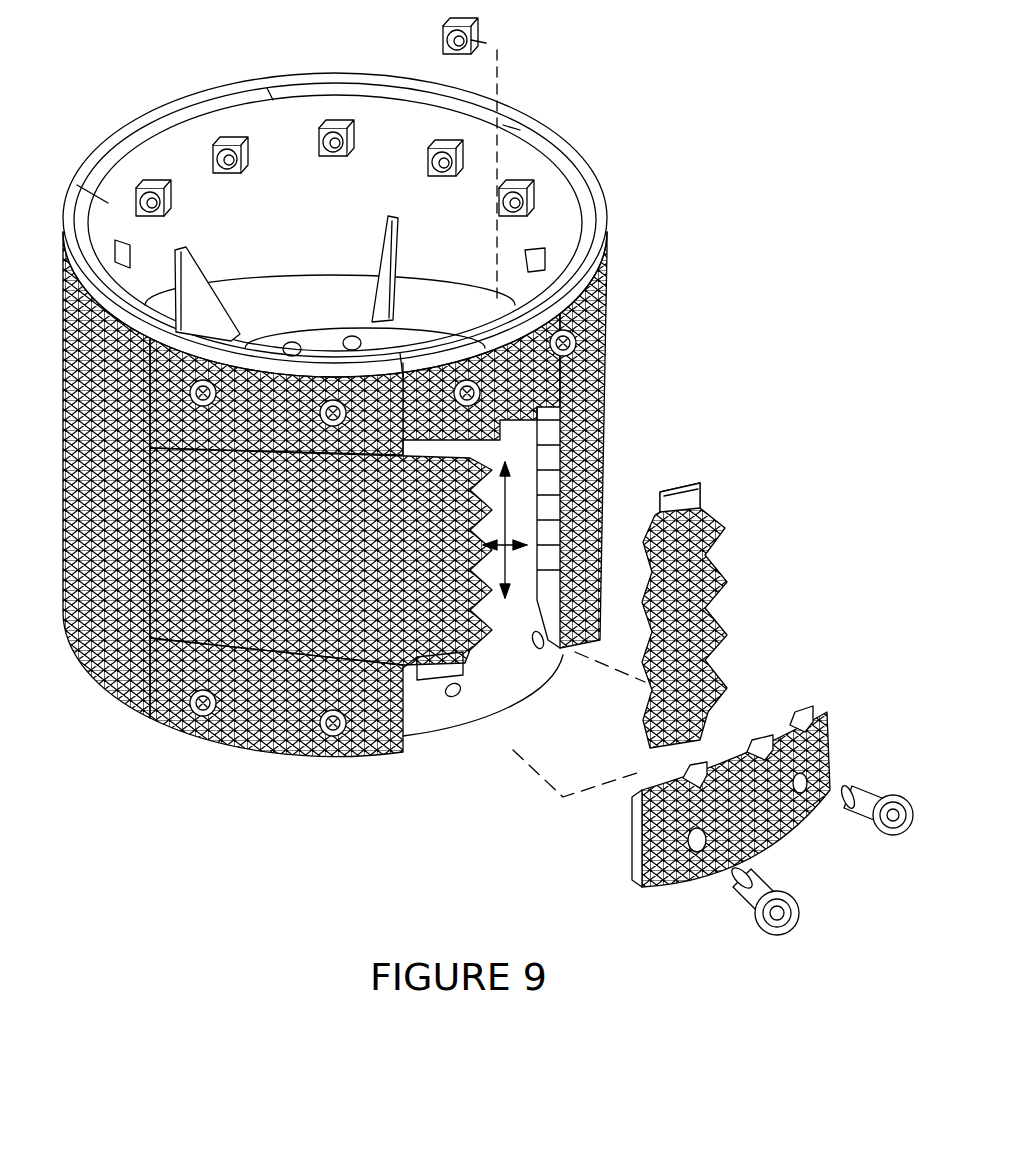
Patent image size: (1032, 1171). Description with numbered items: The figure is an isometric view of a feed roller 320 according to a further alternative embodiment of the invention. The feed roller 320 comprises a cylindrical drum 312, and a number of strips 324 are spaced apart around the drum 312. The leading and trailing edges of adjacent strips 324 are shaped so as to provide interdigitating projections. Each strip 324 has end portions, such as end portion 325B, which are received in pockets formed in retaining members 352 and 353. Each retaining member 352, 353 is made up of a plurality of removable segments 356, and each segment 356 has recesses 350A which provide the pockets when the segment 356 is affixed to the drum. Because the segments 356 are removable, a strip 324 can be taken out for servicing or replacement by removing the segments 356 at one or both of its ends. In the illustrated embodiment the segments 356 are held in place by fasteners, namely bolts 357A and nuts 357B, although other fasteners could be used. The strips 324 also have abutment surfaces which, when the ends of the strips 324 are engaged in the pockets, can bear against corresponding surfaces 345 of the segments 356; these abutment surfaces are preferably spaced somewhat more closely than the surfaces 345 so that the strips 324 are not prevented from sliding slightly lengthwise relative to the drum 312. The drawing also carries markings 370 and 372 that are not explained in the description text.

The feed roller 320 is at (414, 471).
The cylindrical drum 312 is at (486, 673).
The strip 324 is at (690, 516).
The end portion 325B is at (438, 670).
The surface 345 is at (768, 745).
The recess 350A is at (783, 737).
The retaining member 352 is at (163, 743).
The retaining member 353 is at (645, 396).
The removable segment 356 is at (547, 160).
The bolt 357A is at (757, 923).
The nut 357B is at (883, 840).
The adjustment gap 370 is at (517, 550).
The segment edge 372 is at (513, 503).